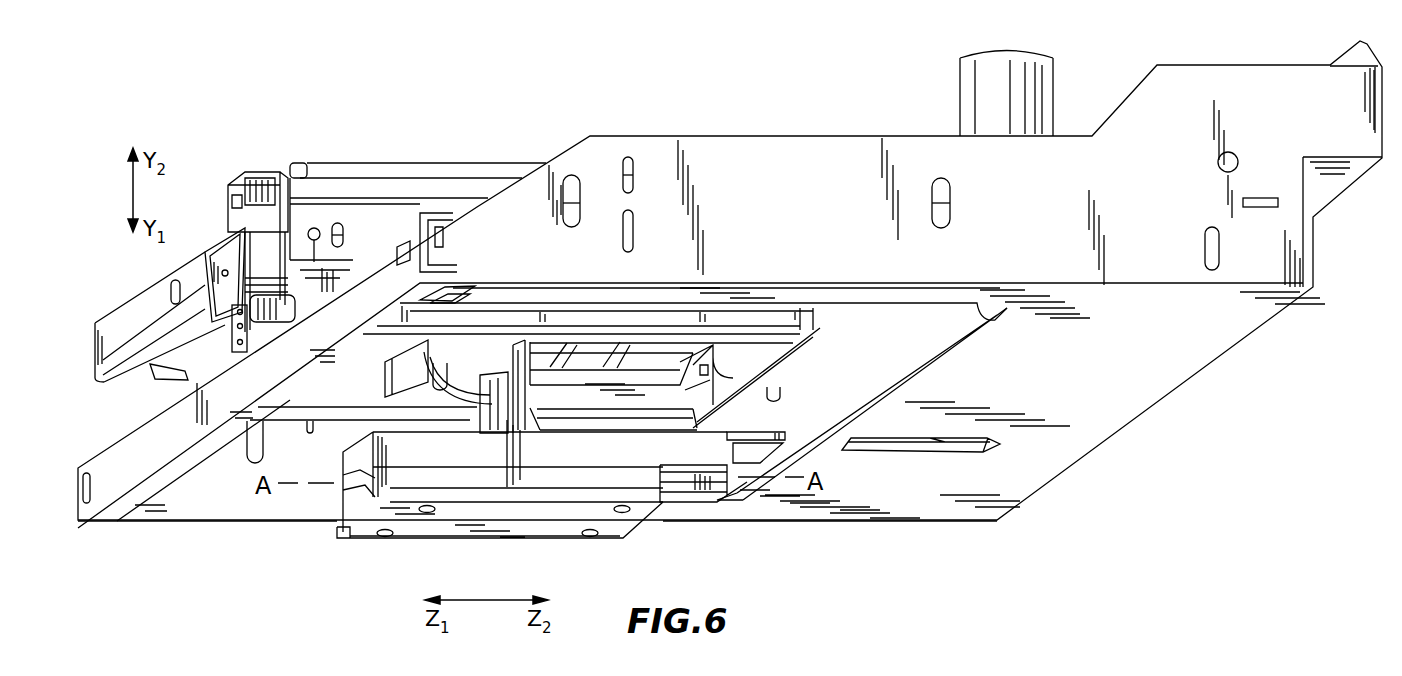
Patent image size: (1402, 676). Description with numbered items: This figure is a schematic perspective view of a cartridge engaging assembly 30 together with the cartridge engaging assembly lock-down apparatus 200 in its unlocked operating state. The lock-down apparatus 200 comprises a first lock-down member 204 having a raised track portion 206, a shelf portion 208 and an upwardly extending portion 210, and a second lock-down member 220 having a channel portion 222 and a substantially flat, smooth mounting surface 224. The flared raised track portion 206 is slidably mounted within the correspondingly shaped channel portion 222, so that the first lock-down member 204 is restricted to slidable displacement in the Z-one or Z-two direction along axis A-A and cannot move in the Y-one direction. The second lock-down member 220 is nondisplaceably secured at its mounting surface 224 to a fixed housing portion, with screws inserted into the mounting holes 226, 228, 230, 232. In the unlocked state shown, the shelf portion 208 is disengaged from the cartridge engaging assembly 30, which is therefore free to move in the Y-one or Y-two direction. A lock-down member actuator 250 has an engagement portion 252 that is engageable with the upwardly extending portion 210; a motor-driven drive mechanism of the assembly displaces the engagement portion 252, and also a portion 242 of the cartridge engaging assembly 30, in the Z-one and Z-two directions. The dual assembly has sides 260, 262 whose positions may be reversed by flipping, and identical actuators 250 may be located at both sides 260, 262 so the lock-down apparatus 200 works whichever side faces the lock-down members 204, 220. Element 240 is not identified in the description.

The cartridge engaging assembly 30 is at (783, 145).
The cartridge engaging assembly lock-down apparatus 200 is at (246, 548).
The first lock-down member 204 is at (558, 458).
The raised track portion 206 is at (703, 497).
The shelf portion 208 is at (775, 432).
The upwardly extending portion 210 is at (515, 410).
The second lock-down member 220 is at (488, 482).
The channel portion 222 is at (358, 495).
The mounting surface 224 is at (465, 538).
The mounting hole 226 is at (427, 505).
The mounting hole 228 is at (385, 537).
The mounting hole 230 is at (622, 505).
The mounting hole 232 is at (590, 537).
The guide strip 240 is at (892, 417).
The portion of the cartridge engaging assembly 242 is at (392, 362).
The lock-down member actuator 250 is at (483, 320).
The engagement portion 252 is at (495, 348).
The side of the cartridge engaging assembly 260 is at (405, 165).
The side of the cartridge engaging assembly 262 is at (143, 370).